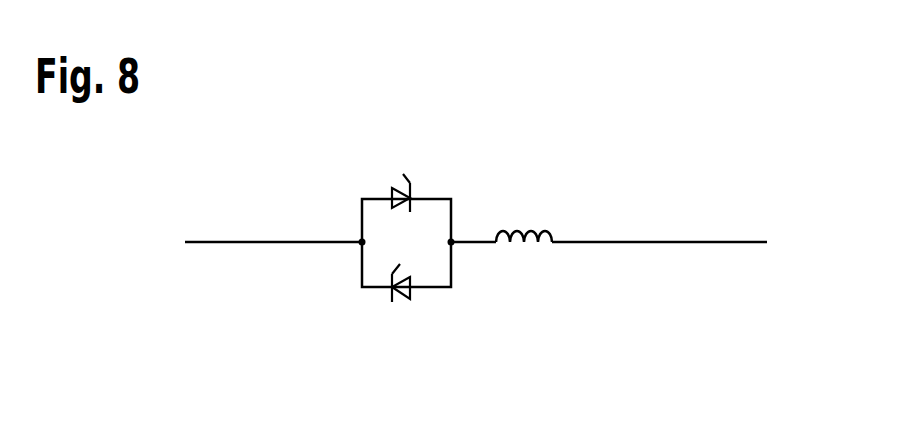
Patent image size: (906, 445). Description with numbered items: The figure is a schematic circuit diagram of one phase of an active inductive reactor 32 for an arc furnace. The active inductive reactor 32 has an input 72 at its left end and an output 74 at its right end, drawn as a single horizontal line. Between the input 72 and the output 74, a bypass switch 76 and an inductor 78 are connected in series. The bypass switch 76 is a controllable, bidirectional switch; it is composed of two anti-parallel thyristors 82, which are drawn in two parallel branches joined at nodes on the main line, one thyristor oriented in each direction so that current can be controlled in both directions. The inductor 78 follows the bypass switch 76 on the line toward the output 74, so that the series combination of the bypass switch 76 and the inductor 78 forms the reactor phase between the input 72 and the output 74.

The input 72 is at (227, 242).
The output 74 is at (687, 242).
The active inductive reactor 32 is at (513, 180).
The bypass switch 76 is at (430, 211).
The thyristors 82 is at (412, 194).
The inductor 78 is at (547, 232).